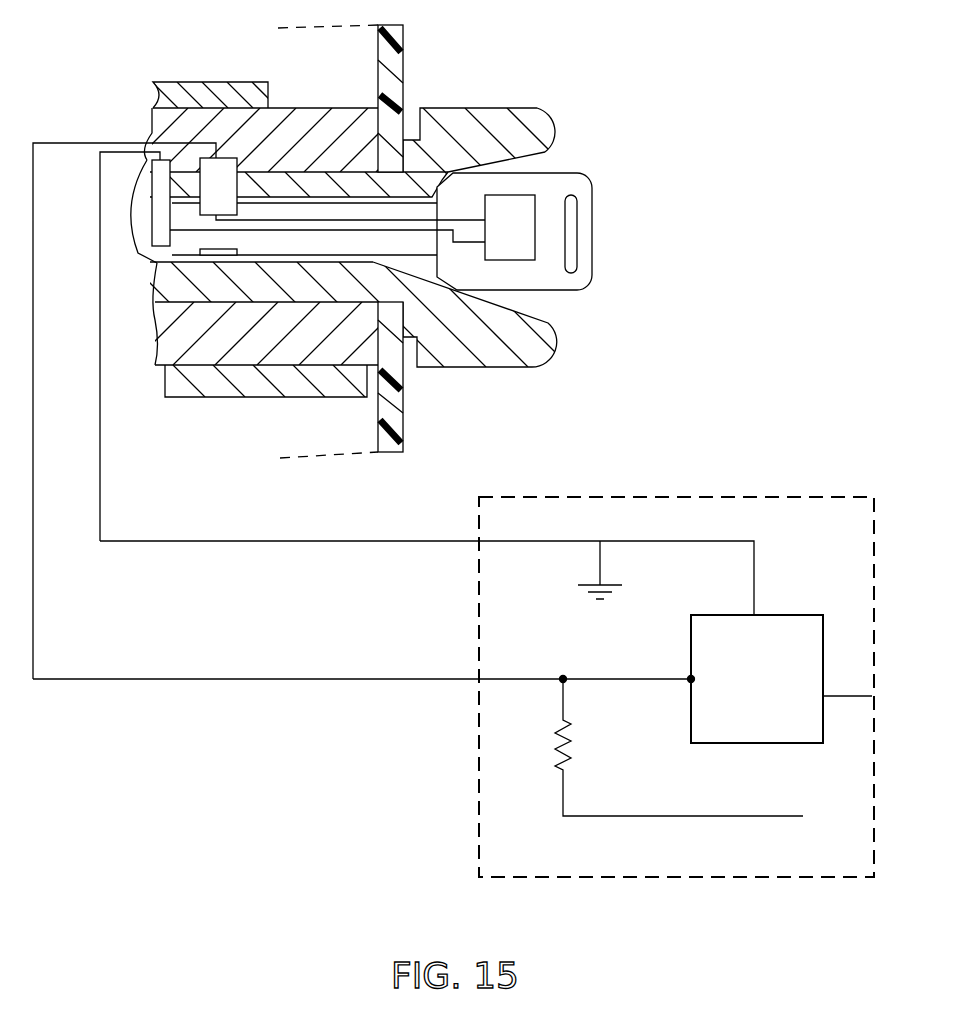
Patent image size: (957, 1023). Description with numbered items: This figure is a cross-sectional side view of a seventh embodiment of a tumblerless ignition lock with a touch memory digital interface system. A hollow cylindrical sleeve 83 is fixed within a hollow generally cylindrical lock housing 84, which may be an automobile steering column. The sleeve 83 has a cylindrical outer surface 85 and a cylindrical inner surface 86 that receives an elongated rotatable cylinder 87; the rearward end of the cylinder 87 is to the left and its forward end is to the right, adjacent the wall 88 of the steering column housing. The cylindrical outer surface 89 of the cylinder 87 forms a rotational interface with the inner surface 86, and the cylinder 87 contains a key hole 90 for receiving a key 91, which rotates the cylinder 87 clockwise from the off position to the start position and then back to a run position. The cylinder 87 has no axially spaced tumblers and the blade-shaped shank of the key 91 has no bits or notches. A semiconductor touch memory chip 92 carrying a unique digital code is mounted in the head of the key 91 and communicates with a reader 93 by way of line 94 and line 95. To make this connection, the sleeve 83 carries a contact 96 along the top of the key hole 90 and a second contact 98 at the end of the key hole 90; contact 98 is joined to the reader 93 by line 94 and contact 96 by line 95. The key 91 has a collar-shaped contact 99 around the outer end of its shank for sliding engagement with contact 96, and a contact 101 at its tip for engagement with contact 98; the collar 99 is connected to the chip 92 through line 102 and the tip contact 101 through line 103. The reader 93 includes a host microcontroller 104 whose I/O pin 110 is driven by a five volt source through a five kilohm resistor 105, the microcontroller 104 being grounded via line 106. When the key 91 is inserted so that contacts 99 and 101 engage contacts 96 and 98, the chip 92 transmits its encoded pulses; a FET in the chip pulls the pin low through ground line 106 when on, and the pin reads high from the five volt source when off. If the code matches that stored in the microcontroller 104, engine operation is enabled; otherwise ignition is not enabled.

The hollow cylindrical sleeve 83 is at (170, 135).
The lock housing 84 is at (170, 92).
The cylindrical outer surface 85 is at (290, 107).
The cylindrical inner surface 86 is at (340, 170).
The rotatable cylinder 87 is at (347, 290).
The wall 88 is at (395, 32).
The cylindrical outer surface 89 is at (320, 170).
The key hole 90 is at (418, 198).
The key 91 is at (567, 282).
The touch memory chip 92 is at (523, 200).
The reader 93 is at (775, 497).
The line 94 is at (358, 541).
The line 95 is at (352, 681).
The contact 96 is at (222, 173).
The second contact 98 is at (157, 227).
The contact 99 is at (207, 210).
The contact 101 is at (213, 253).
The line 102 is at (470, 232).
The line 103 is at (470, 232).
The host microcontroller 104 is at (872, 696).
The resistor 105 is at (569, 752).
The ground line 106 is at (602, 566).
The I/O pin 110 is at (690, 679).